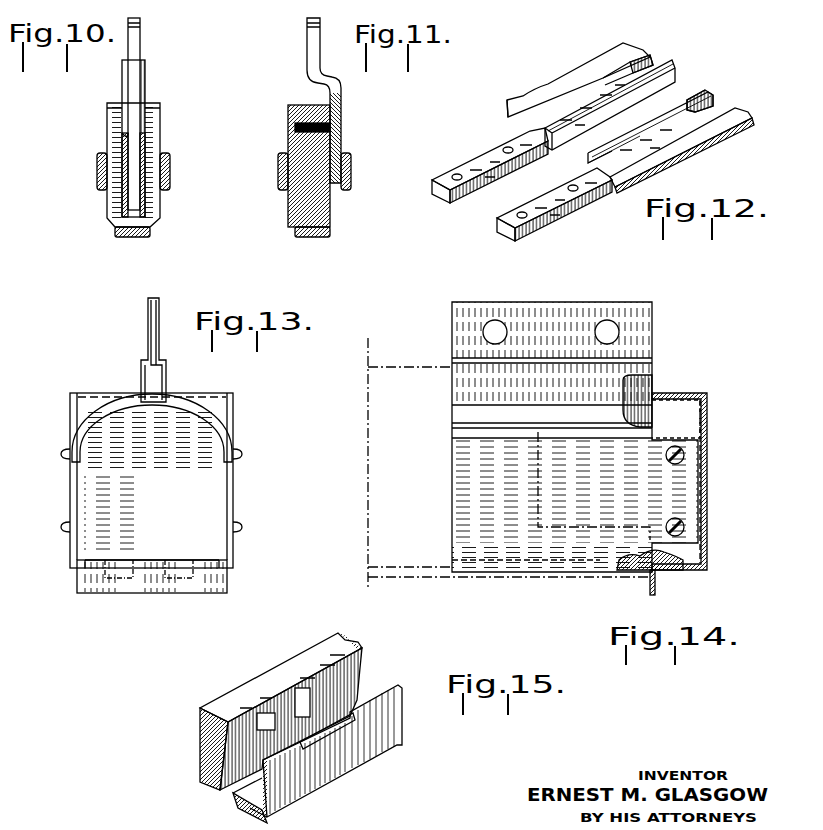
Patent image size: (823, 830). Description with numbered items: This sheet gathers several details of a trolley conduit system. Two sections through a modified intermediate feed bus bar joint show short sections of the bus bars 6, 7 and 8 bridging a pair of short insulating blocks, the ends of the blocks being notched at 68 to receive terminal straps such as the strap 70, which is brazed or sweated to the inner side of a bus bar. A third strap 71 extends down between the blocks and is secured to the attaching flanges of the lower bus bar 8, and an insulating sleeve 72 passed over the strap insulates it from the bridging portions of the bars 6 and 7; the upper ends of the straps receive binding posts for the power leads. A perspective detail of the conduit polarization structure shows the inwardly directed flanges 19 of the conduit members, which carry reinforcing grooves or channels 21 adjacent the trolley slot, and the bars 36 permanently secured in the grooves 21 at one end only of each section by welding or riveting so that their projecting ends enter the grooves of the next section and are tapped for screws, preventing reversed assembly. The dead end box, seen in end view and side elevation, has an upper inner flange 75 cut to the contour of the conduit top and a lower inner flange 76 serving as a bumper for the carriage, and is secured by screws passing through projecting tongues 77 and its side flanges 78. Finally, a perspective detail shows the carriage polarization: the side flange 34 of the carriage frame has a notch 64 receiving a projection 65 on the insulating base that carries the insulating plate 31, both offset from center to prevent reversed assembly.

In FIG. 10, the bus bar 6 is at (97, 167).
In FIG. 11, the bus bar 6 is at (278, 170).
In FIG. 10, the bus bar 7 is at (168, 173).
In FIG. 11, the bus bar 7 is at (351, 168).
In FIG. 10, the bus bar 8 is at (130, 228).
In FIG. 11, the bus bar 8 is at (305, 236).
In FIG. 12, the inwardly directed flange 19 is at (583, 77).
In FIG. 12, the reinforcing groove 21 is at (650, 62).
In FIG. 15, the insulating plate 31 is at (315, 648).
In FIG. 15, the side flange 34 is at (392, 727).
In FIG. 12, the bar 36 is at (478, 163).
In FIG. 15, the notch 64 is at (303, 744).
In FIG. 15, the projection 65 is at (266, 715).
In FIG. 11, the notch 68 is at (332, 202).
In FIG. 11, the terminal strap 70 is at (312, 78).
In FIG. 10, the third strap 71 is at (133, 48).
In FIG. 10, the insulating sleeve 72 is at (145, 78).
In FIG. 13, the upper inner flange 75 is at (217, 436).
In FIG. 14, the upper inner flange 75 is at (677, 393).
In FIG. 13, the lower inner flange 76 is at (160, 584).
In FIG. 14, the lower inner flange 76 is at (650, 587).
In FIG. 13, the projecting tongue 77 is at (235, 497).
In FIG. 14, the projecting tongue 77 is at (680, 487).
In FIG. 14, the side flange 78 is at (690, 558).